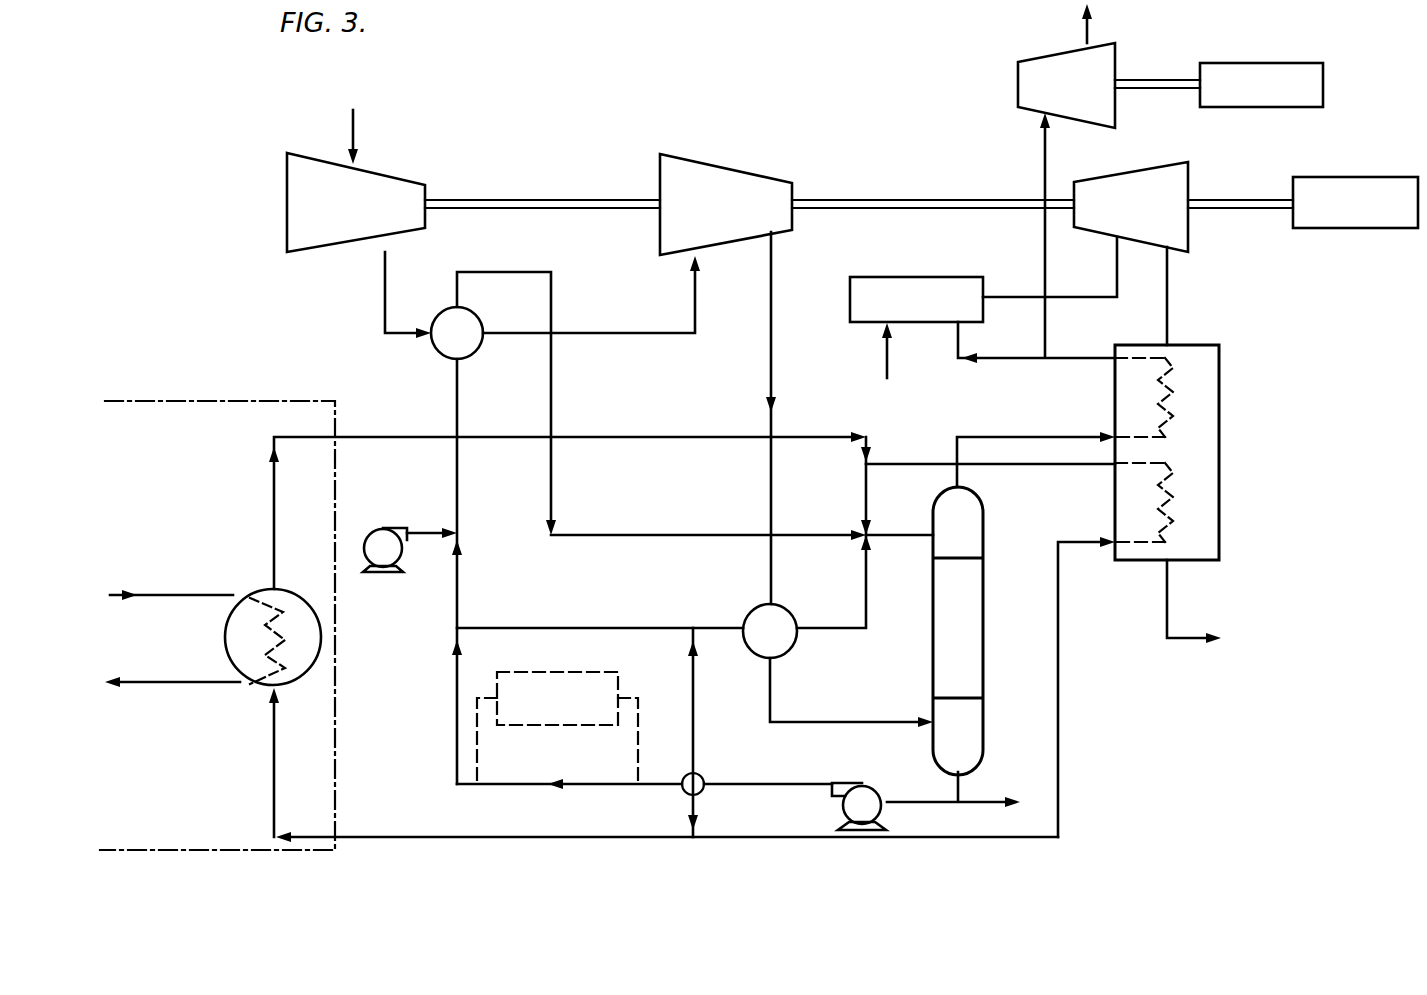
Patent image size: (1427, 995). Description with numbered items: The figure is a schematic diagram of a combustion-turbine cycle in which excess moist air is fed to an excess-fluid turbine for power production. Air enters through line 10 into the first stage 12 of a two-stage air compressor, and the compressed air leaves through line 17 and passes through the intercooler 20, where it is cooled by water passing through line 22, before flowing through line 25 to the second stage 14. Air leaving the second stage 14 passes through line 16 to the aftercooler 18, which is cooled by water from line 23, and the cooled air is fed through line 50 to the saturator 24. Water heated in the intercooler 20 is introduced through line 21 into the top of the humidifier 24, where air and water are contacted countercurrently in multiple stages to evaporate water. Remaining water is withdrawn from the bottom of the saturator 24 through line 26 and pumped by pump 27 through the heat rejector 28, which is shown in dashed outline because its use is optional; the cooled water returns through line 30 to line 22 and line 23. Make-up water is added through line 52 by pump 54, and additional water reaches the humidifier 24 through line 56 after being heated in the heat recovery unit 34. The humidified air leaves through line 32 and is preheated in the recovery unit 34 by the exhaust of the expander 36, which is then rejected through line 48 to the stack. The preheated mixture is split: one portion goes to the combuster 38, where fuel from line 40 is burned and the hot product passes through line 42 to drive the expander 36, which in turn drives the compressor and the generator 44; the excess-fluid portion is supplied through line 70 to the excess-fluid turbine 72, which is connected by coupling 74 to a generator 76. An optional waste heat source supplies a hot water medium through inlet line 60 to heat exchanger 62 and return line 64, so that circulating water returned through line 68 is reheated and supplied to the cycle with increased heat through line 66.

The air inlet line 10 is at (356, 136).
The first stage of air compressor 12 is at (287, 177).
The second stage of air compressor 14 is at (750, 177).
The second stage discharge line 16 is at (771, 321).
The first stage discharge line 17 is at (388, 248).
The aftercooler heat exchanger 18 is at (786, 612).
The intercooler heat exchanger 20 is at (449, 313).
The heated water line 21 is at (657, 535).
The intercooler water line 22 is at (866, 590).
The aftercooler water line 23 is at (575, 628).
The saturator 24 is at (933, 649).
The intercooler outlet line 25 is at (695, 297).
The saturator bottom outlet line 26 is at (960, 787).
The pump 27 is at (878, 782).
The heat rejector 28 is at (576, 672).
The cooled water line 30 is at (457, 697).
The humidified air line 32 is at (1020, 437).
The heat recovery unit 34 is at (1219, 437).
The expander 36 is at (1148, 168).
The combuster 38 is at (948, 277).
The fuel line 40 is at (887, 350).
The combustion product line 42 is at (1093, 297).
The generator 44 is at (1375, 177).
The exhaust line 48 is at (1168, 595).
The aftercooler outlet air line 50 is at (771, 686).
The make-up water line 52 is at (423, 536).
The make-up water pump 54 is at (392, 529).
The recovery unit water line 56 is at (912, 462).
The hot water medium inlet line 60 is at (214, 595).
The waste heat exchanger 62 is at (300, 591).
The waste heat return line 64 is at (180, 684).
The heated circulating water line 66 is at (380, 435).
The circulating water return line 68 is at (410, 837).
The excess fluid line 70 is at (1045, 328).
The excess-fluid turbine 72 is at (1018, 90).
The coupling 74 is at (1168, 80).
The generator 76 is at (1290, 63).